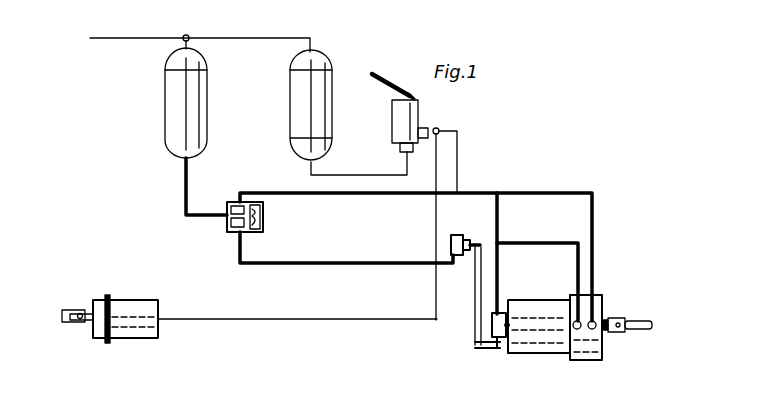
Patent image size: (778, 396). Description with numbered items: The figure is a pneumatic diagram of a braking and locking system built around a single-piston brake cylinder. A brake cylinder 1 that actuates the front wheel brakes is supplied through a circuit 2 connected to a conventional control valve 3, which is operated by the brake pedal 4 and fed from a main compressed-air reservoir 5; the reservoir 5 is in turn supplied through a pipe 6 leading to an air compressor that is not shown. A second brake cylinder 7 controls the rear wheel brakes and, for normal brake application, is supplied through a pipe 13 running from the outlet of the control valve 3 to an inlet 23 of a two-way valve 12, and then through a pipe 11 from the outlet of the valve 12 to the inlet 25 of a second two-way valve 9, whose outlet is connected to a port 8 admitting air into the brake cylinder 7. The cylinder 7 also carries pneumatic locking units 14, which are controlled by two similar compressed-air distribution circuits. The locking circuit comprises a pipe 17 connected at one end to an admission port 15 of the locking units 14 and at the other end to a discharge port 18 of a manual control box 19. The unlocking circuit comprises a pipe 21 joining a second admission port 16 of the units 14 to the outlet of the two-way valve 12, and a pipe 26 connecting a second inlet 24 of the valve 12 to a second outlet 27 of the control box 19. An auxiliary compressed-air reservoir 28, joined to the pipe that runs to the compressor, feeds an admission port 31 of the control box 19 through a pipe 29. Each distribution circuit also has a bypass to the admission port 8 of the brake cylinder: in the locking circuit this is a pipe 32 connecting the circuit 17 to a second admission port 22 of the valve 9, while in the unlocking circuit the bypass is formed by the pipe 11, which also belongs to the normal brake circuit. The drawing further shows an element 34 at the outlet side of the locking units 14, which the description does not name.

The brake cylinder 1 is at (138, 306).
The circuit 2 is at (280, 320).
The control valve 3 is at (400, 120).
The brake pedal 4 is at (388, 83).
The main compressed-air reservoir 5 is at (313, 63).
The pipe 6 is at (143, 38).
The brake cylinder 7 is at (536, 352).
The port 8 is at (506, 326).
The second two-way valve 9 is at (490, 336).
The pipe 11 is at (476, 328).
The two-way valve 12 is at (466, 243).
The pipe 13 is at (462, 160).
The pneumatic locking units 14 is at (576, 362).
The admission port 15 is at (604, 318).
The second admission port 16 is at (573, 323).
The pipe 17 is at (345, 196).
The discharge port 18 is at (234, 201).
The manual control box 19 is at (265, 217).
The pipe 21 is at (530, 240).
The second admission port 22 is at (495, 313).
The inlet 23 is at (456, 232).
The second inlet 24 is at (459, 265).
The inlet 25 is at (496, 348).
The pipe 26 is at (346, 261).
The second outlet 27 is at (236, 233).
The auxiliary compressed-air reservoir 28 is at (172, 105).
The pipe 29 is at (178, 185).
The admission port 31 is at (223, 218).
The pipe 32 is at (500, 258).
The cylinder outlet 34 is at (605, 331).